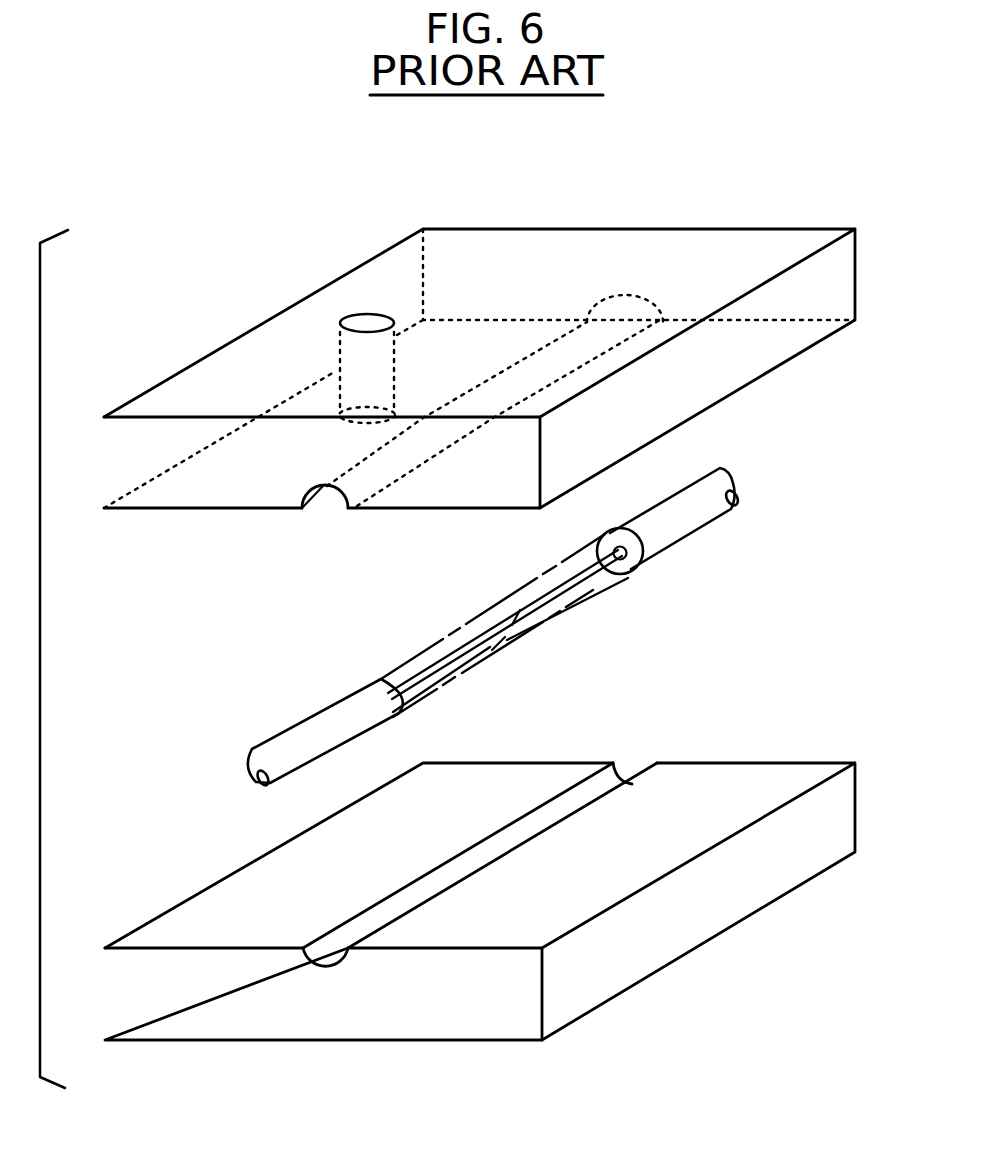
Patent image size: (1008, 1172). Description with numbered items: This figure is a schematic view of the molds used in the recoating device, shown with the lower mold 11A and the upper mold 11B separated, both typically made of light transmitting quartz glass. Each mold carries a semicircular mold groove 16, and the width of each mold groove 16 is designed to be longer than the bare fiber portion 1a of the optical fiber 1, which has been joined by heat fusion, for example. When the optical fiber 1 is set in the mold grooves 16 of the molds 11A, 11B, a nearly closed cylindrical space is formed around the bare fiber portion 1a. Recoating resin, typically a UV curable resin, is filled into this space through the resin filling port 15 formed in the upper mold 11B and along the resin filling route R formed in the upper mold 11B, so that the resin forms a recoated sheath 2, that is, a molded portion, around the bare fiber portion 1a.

The optical fiber 1 is at (305, 713).
The bare fiber portion 1a is at (492, 650).
The recoated sheath 2 is at (590, 597).
The lower mold 11A is at (783, 893).
The upper mold 11B is at (637, 229).
The resin filling port 15 is at (357, 317).
The mold groove 16 is at (329, 505).
The resin filling route R is at (413, 433).